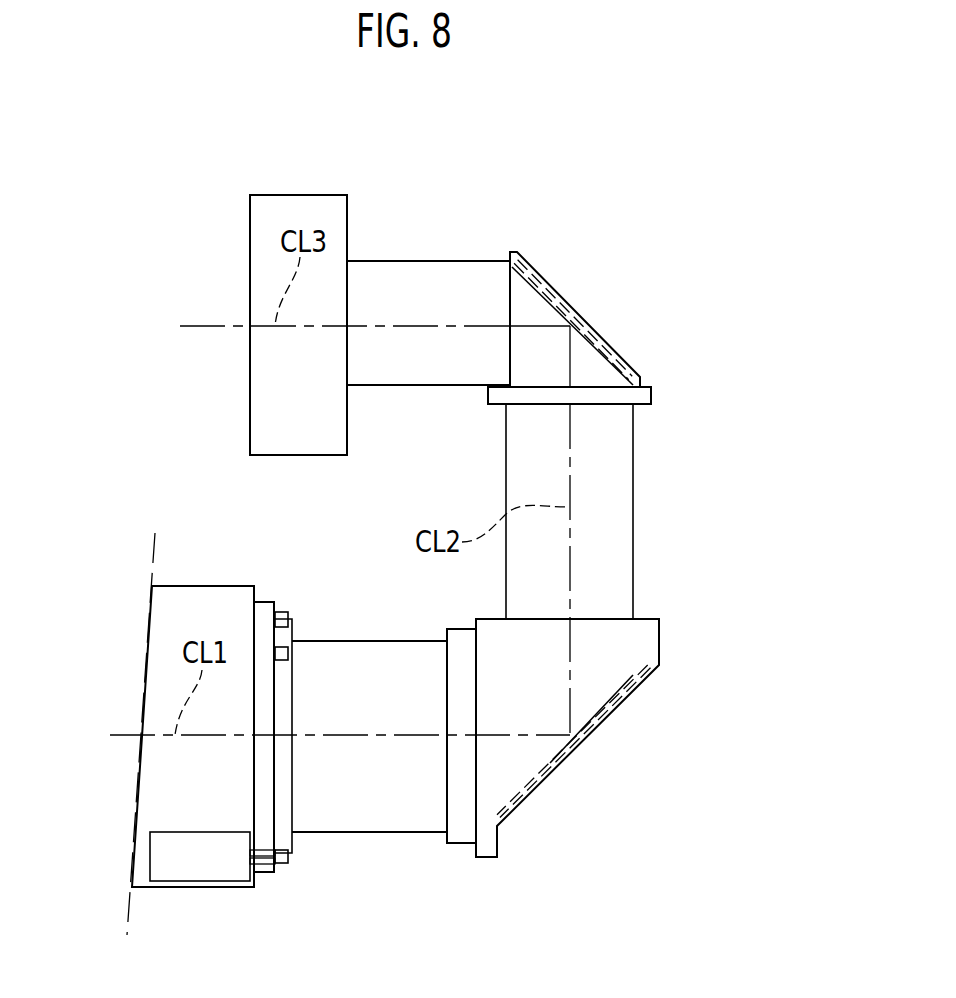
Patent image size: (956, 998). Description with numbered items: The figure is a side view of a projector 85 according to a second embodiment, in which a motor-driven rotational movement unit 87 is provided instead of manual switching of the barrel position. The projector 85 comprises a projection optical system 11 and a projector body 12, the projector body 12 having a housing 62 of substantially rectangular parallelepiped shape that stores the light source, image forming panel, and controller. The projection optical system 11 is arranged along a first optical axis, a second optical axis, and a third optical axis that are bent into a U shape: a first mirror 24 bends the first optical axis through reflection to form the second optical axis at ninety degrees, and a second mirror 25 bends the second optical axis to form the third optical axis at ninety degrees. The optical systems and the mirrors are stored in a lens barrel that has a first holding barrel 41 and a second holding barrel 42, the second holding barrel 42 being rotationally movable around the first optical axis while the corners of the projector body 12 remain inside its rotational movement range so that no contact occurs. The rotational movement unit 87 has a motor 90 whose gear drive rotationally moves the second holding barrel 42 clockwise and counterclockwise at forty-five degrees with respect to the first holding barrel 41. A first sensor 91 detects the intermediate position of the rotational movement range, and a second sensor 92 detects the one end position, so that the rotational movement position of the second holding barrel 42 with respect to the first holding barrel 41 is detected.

The projector 85 is at (187, 226).
The projection optical system 11 is at (447, 243).
The second mirror 25 is at (593, 330).
The projector body 12 is at (138, 637).
The housing 62 is at (220, 595).
The first holding barrel 41 is at (269, 586).
The first sensor 91 is at (283, 613).
The second sensor 92 is at (283, 650).
The motor 90 is at (185, 867).
The rotational movement unit 87 is at (298, 912).
The second holding barrel 42 is at (490, 872).
The first mirror 24 is at (550, 762).